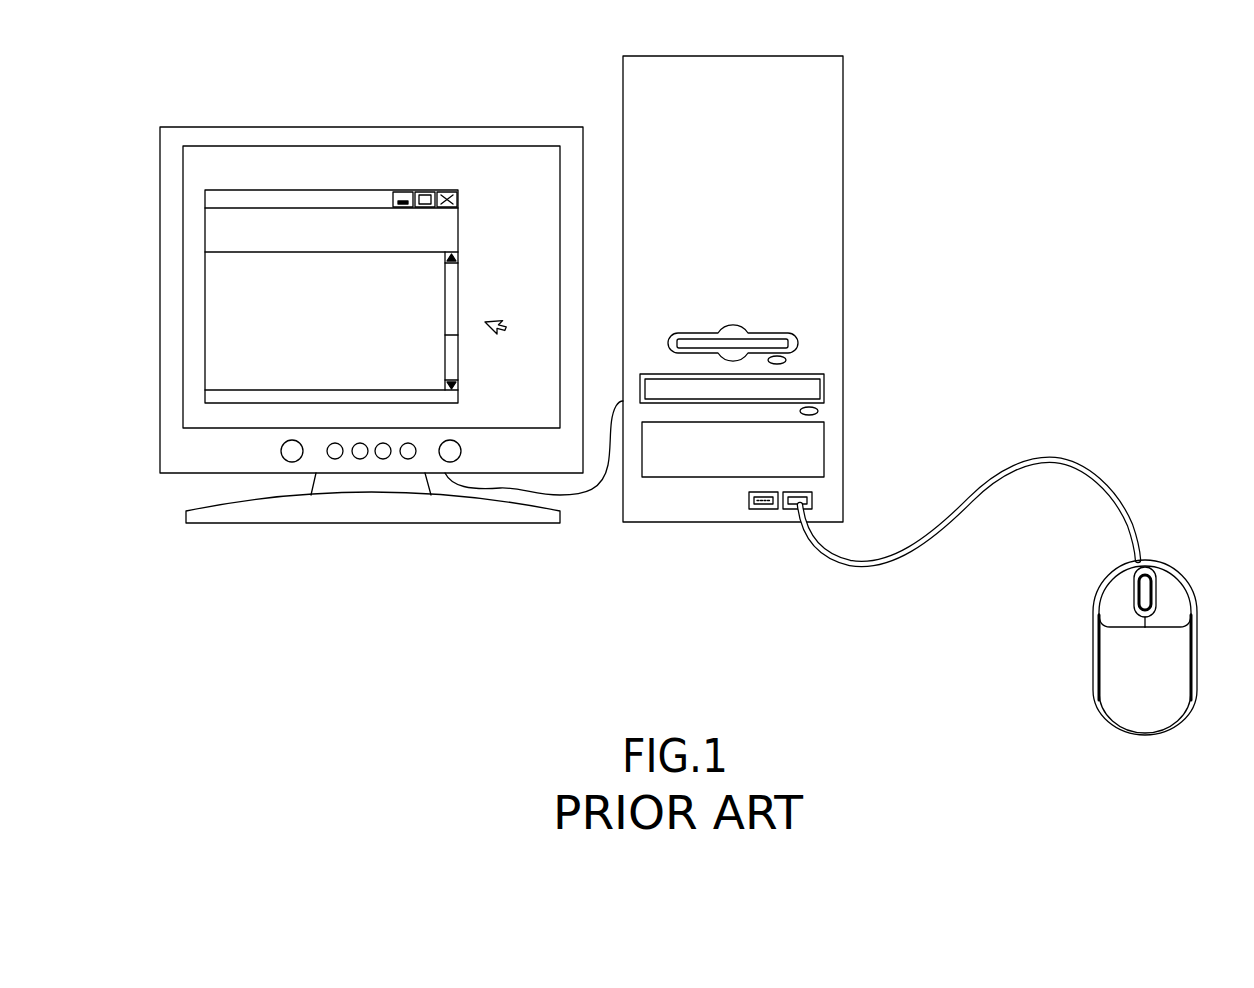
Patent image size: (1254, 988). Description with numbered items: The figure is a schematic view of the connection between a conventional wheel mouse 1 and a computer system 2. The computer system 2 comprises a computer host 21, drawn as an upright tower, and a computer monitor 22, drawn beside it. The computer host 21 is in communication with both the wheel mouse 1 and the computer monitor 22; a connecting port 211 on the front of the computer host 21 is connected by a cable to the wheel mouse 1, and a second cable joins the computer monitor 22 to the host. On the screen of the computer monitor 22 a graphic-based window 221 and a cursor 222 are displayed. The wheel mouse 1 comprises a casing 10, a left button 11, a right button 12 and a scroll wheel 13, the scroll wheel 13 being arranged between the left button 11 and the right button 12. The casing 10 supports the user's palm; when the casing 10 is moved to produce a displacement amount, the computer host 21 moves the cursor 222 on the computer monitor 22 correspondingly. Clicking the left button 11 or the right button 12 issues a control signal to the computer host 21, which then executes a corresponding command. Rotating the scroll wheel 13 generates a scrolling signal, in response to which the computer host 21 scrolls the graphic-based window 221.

The wheel mouse 1 is at (1073, 573).
The casing 10 is at (1172, 650).
The left button 11 is at (1118, 600).
The right button 12 is at (1170, 598).
The scroll wheel 13 is at (1143, 585).
The computer system 2 is at (651, 35).
The computer host 21 is at (739, 67).
The connecting port 211 is at (762, 506).
The computer monitor 22 is at (468, 125).
The graphic-based window 221 is at (287, 232).
The cursor 222 is at (503, 339).